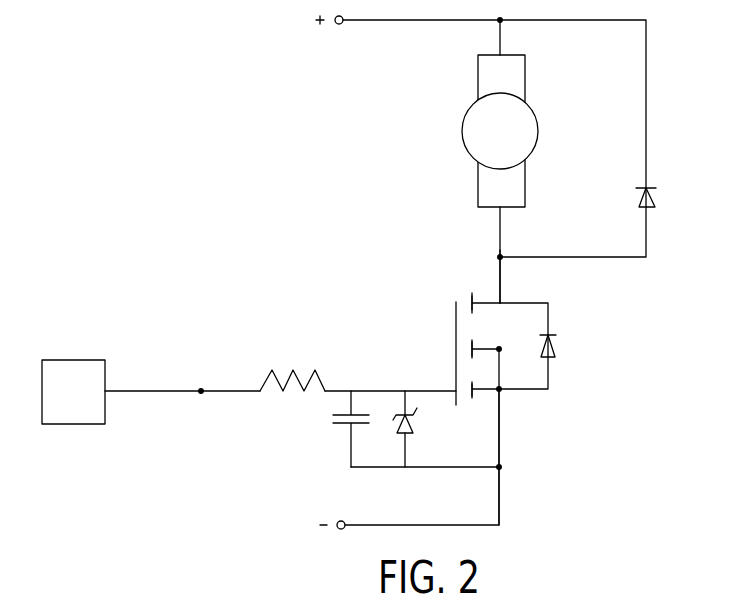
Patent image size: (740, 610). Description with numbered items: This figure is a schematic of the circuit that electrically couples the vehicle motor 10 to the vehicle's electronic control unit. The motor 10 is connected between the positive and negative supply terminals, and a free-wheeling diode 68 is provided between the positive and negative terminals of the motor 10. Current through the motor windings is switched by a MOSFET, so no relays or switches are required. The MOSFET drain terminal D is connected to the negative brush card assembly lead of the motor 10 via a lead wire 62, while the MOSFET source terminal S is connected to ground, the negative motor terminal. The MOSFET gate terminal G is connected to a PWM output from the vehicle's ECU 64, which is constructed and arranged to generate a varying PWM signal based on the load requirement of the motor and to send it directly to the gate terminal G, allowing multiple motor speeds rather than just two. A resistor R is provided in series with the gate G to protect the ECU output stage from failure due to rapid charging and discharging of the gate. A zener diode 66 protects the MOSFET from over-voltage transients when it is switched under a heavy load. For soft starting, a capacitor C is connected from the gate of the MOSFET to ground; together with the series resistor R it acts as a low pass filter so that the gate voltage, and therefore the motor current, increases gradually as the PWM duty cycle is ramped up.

The motor 10 is at (538, 128).
The lead wire 62 is at (503, 265).
The ECU 64 is at (105, 407).
The zener diode 66 is at (413, 432).
The free-wheeling diode 68 is at (655, 205).
The drain terminal D is at (470, 298).
The source terminal S is at (475, 355).
The gate terminal G is at (475, 397).
The resistor R is at (292, 368).
The capacitor C is at (346, 425).